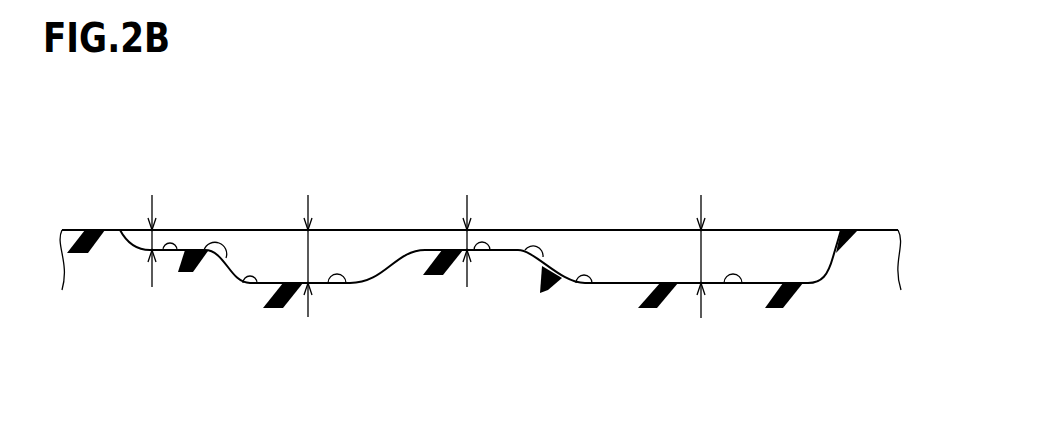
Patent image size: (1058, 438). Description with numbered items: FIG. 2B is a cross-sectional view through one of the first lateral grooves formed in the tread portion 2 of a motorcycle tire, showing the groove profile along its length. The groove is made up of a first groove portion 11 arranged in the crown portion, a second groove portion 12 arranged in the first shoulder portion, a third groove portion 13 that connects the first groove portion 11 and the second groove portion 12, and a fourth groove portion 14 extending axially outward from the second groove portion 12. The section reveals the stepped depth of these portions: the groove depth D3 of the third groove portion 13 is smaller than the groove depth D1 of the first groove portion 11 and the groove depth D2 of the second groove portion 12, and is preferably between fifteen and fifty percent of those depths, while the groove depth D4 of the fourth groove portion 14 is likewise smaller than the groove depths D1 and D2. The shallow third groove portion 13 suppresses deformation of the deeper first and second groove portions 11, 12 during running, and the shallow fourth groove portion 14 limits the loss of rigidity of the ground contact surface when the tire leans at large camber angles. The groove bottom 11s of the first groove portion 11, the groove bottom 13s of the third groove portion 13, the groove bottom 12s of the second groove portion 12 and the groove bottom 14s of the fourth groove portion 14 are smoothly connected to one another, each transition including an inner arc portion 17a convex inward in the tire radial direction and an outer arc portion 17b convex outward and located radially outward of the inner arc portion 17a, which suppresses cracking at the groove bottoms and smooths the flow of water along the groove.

The tread portion 2 is at (95, 229).
The first groove portion 11 is at (747, 218).
The second groove portion 12 is at (340, 218).
The third groove portion 13 is at (495, 218).
The fourth groove portion 14 is at (183, 218).
The groove bottom of the first groove portion 11s is at (742, 283).
The groove bottom of the second groove portion 12s is at (346, 283).
The groove bottom of the third groove portion 13s is at (490, 250).
The groove bottom of the fourth groove portion 14s is at (177, 250).
The inner arc portion 17a is at (257, 283).
The outer arc portion 17b is at (226, 258).
The groove depth of the first groove portion D1 is at (700, 257).
The groove depth of the second groove portion D2 is at (307, 257).
The groove depth of the third groove portion D3 is at (465, 242).
The groove depth of the fourth groove portion D4 is at (152, 226).